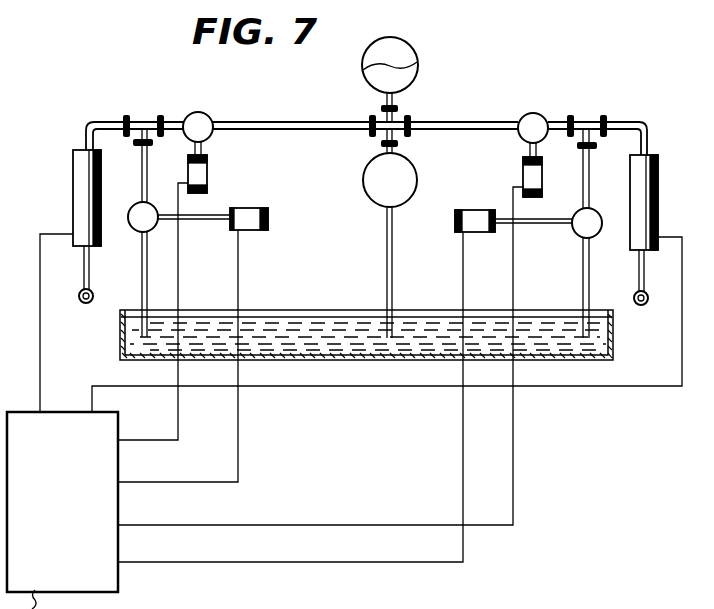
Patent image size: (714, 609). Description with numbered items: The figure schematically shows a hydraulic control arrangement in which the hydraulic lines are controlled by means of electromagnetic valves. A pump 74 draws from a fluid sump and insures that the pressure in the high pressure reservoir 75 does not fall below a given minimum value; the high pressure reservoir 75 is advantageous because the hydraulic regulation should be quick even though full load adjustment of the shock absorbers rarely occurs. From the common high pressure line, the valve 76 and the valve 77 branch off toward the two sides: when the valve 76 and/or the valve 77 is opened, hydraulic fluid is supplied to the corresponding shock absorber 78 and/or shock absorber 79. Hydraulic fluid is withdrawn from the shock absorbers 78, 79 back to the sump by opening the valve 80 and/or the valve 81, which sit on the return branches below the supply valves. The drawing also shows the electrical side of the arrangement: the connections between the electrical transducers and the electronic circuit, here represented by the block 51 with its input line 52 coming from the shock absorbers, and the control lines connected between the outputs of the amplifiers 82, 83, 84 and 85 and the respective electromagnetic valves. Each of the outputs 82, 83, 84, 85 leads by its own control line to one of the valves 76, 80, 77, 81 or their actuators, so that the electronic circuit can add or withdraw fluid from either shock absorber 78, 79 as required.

The controller 51 is at (40, 392).
The control line 52 is at (92, 400).
The pump 74 is at (409, 188).
The high pressure reservoir 75 is at (416, 76).
The valve 76 is at (209, 114).
The valve 77 is at (545, 117).
The shock absorber 78 is at (73, 182).
The shock absorber 79 is at (658, 185).
The valve 80 is at (134, 208).
The valve 81 is at (596, 211).
The amplifier output 82 is at (135, 318).
The amplifier output 83 is at (160, 363).
The amplifier output 84 is at (302, 363).
The amplifier output 85 is at (272, 404).